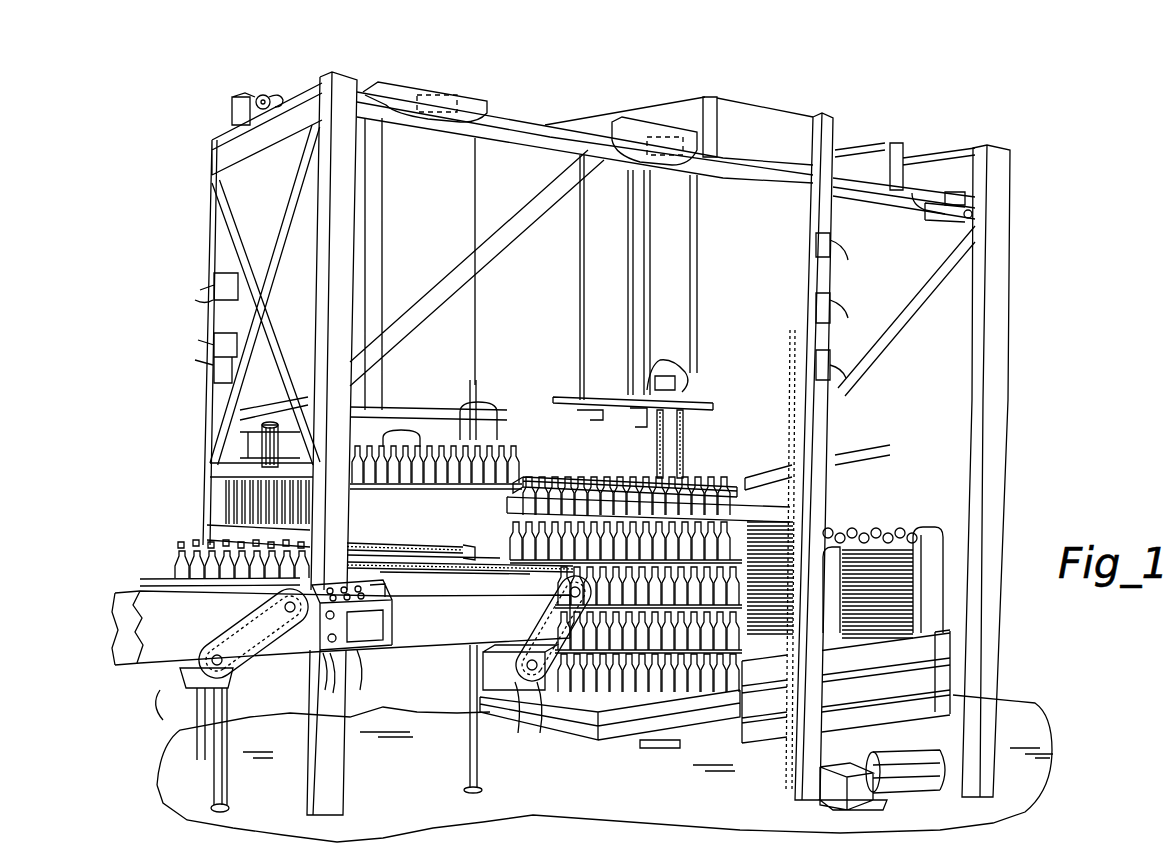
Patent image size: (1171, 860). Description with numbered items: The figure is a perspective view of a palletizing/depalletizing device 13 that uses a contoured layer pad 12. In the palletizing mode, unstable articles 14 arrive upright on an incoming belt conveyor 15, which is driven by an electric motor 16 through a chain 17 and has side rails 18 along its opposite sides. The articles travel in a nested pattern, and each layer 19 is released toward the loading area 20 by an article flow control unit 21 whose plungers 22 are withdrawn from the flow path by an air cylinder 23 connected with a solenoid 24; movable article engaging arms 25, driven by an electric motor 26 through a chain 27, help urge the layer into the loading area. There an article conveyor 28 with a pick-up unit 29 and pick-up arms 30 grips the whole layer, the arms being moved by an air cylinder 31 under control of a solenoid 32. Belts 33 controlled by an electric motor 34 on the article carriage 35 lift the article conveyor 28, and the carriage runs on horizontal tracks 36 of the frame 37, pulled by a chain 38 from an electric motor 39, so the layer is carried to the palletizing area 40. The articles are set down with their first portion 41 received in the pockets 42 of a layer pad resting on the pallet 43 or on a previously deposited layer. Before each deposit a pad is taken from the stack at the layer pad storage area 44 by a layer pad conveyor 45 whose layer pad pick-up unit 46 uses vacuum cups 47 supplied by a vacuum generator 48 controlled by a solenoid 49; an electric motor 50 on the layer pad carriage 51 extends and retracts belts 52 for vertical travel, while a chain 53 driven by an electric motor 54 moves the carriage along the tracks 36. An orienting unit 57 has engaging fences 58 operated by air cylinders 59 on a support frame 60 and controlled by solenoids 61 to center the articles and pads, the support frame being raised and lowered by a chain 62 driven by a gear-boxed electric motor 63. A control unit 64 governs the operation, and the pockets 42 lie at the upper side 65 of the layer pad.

The contoured layer pad 12 is at (880, 533).
The palletizing/depalletizing device 13 is at (846, 134).
The unstable articles 14 is at (173, 563).
The incoming belt conveyor 15 is at (140, 598).
The electric motor 16 is at (185, 682).
The chain 17 is at (243, 652).
The side rails 18 is at (167, 590).
The layer of unstable articles 19 is at (585, 680).
The loading area 20 is at (388, 544).
The article flow control unit 21 is at (197, 470).
The plungers 22 is at (225, 500).
The air cylinder 23 is at (265, 425).
The solenoid 24 is at (213, 332).
The movable article engaging arms 25 is at (480, 513).
The electric motor 26 is at (480, 677).
The chain 27 is at (540, 612).
The article conveyor 28 is at (497, 437).
The pick-up unit 29 is at (547, 427).
The pick-up arms 30 is at (400, 440).
The air cylinder 31 is at (467, 437).
The solenoid 32 is at (222, 272).
The belts 33 is at (380, 153).
The electric motor 34 is at (458, 94).
The article carriage 35 is at (399, 86).
The horizontal tracks 36 is at (757, 173).
The frame 37 is at (538, 128).
The chain 38 is at (293, 72).
The electric motor 39 is at (247, 97).
The palletizing area 40 is at (695, 479).
The first portion 41 is at (690, 690).
The pockets 42 is at (830, 527).
The pallet 43 is at (615, 727).
The layer pad storage area 44 is at (835, 522).
The layer pad conveyor 45 is at (697, 403).
The layer pad pick-up unit 46 is at (645, 452).
The vacuum cups 47 is at (604, 448).
The vacuum generator 48 is at (690, 360).
The solenoid 49 is at (810, 360).
The electric motor 50 is at (690, 105).
The layer pad carriage 51 is at (648, 120).
The belts 52 is at (600, 228).
The chain 53 is at (917, 197).
The electric motor 54 is at (963, 197).
The orienting unit 57 is at (743, 497).
The engaging fences 58 is at (625, 466).
The air cylinders 59 is at (578, 478).
The support frame 60 is at (505, 503).
The solenoids 61 is at (856, 240).
The chain 62 is at (808, 425).
The electric motor 63 is at (922, 758).
The control unit 64 is at (373, 650).
The one side 65 is at (900, 530).